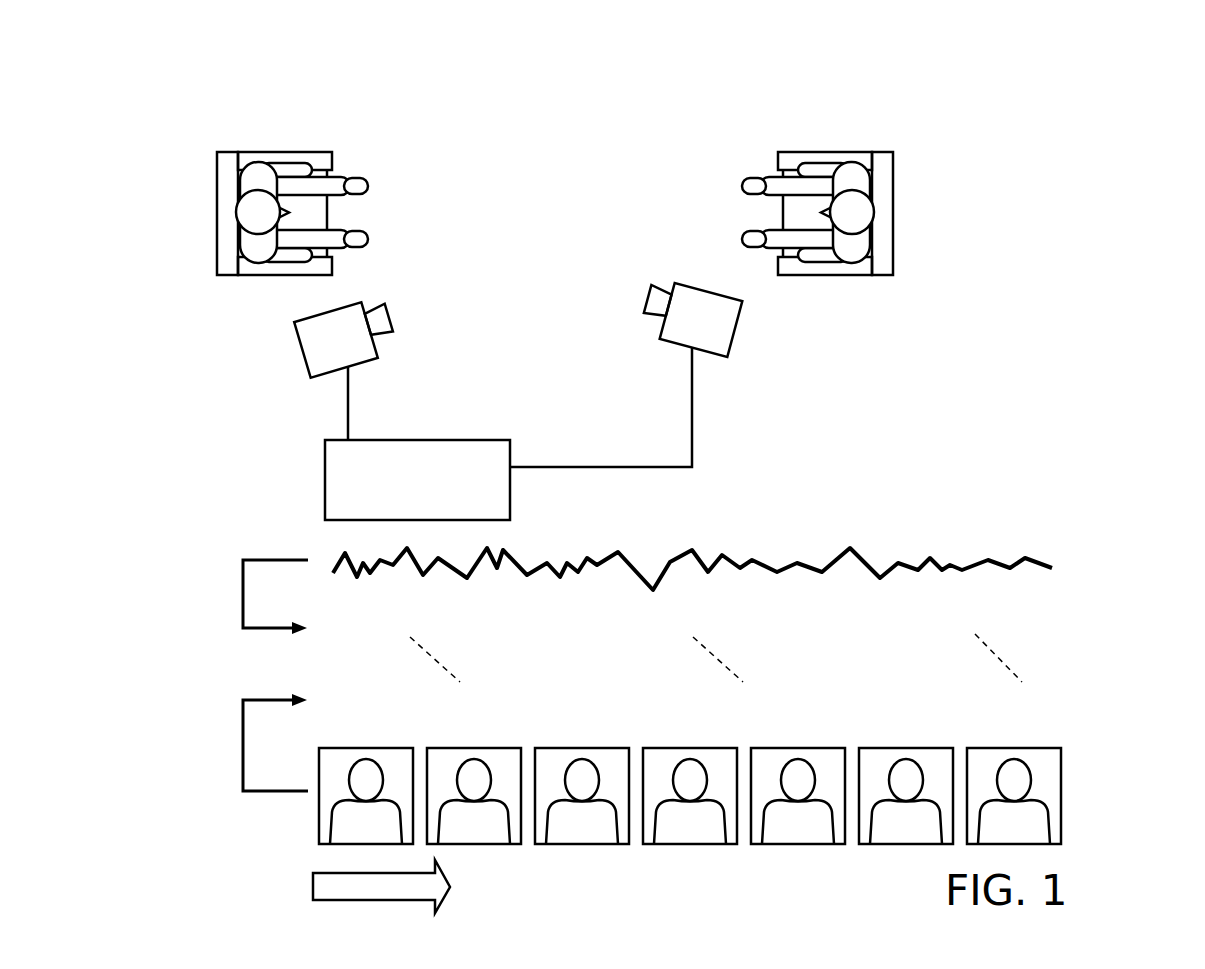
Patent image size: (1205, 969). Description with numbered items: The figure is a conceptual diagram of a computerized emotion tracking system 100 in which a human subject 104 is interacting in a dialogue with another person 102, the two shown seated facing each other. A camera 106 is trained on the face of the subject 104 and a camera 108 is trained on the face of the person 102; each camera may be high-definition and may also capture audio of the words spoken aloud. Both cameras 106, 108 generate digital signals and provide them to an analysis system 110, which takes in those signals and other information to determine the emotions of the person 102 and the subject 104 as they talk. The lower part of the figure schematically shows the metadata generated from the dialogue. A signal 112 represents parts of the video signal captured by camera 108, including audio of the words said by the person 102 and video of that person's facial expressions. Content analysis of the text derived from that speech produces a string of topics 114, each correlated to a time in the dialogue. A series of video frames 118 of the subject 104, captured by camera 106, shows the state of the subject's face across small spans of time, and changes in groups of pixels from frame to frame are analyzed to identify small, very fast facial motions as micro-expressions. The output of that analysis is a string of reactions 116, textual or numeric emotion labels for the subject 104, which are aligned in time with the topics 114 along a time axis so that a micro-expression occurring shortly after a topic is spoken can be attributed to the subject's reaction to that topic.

The system 100 is at (436, 128).
The person 102 is at (257, 162).
The human subject 104 is at (852, 165).
The camera 106 is at (297, 342).
The camera 108 is at (737, 328).
The analysis system 110 is at (386, 491).
The signal 112 is at (1138, 570).
The topics 114 is at (1138, 638).
The reactions 116 is at (1187, 712).
The video frames 118 is at (1152, 812).